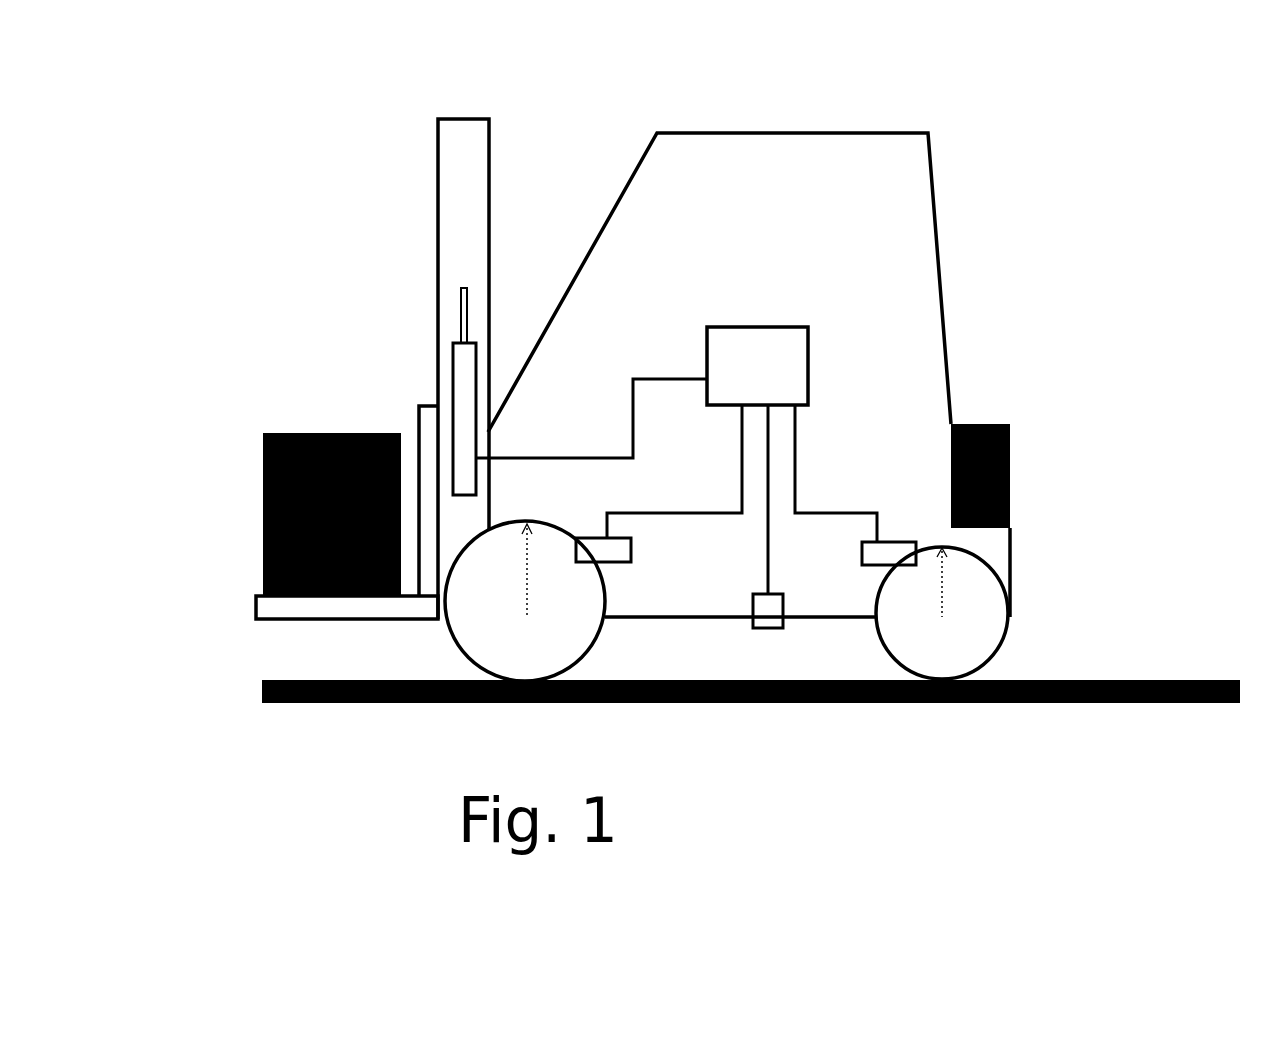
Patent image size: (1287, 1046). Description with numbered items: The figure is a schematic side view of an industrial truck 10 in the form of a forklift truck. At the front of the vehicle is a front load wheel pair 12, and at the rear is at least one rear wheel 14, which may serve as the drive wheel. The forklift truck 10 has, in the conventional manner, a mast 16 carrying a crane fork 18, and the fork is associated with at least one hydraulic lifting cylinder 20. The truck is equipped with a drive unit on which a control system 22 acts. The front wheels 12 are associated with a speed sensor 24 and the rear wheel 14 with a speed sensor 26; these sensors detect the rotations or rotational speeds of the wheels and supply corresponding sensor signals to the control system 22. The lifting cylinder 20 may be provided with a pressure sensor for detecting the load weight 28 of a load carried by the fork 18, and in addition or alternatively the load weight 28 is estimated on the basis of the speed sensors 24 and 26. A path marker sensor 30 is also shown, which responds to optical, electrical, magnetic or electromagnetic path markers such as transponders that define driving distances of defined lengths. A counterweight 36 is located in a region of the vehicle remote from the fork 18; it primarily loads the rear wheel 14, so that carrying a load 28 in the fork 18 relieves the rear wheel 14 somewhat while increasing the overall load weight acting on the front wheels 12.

The industrial truck 10 is at (997, 148).
The front load wheel pair 12 is at (490, 652).
The rear wheel 14 is at (953, 663).
The mast 16 is at (450, 157).
The crane fork 18 is at (276, 612).
The hydraulic lifting cylinder 20 is at (462, 370).
The control system 22 is at (748, 345).
The speed sensor 24 is at (622, 560).
The speed sensor 26 is at (870, 553).
The load weight 28 is at (250, 418).
The path marker sensor 30 is at (763, 623).
The counterweight 36 is at (1014, 410).